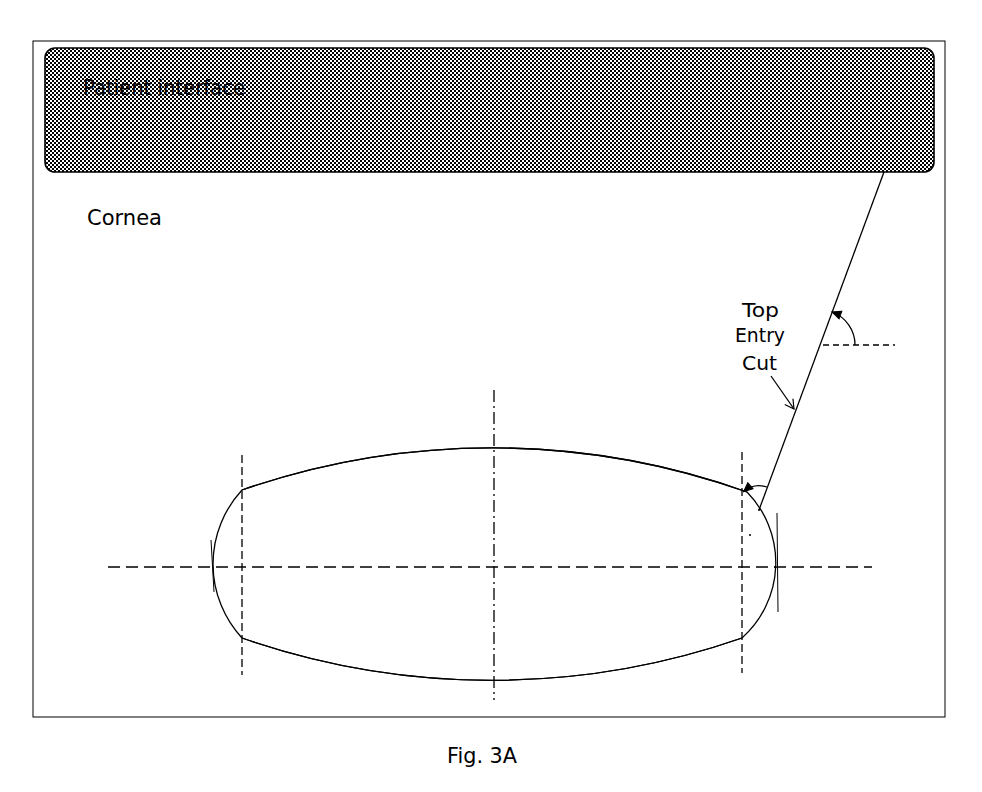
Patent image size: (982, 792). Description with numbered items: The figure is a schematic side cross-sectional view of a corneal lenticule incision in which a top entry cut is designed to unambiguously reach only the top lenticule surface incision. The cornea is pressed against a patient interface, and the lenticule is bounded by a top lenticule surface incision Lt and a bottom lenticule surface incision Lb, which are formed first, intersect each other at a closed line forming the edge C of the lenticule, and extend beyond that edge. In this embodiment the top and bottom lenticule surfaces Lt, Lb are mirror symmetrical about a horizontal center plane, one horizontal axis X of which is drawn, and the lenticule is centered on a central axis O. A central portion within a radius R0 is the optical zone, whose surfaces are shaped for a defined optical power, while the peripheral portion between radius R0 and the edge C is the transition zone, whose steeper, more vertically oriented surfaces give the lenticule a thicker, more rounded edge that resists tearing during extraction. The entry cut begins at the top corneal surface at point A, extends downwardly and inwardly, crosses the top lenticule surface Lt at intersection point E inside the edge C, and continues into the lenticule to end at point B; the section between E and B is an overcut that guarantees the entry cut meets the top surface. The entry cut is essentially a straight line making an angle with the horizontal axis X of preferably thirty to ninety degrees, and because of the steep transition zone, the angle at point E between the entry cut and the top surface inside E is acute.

The surface opening of entry cut A is at (887, 176).
The end point of entry cut B is at (748, 535).
The edge of lenticule C is at (778, 566).
The intersection point E is at (756, 510).
The central axis O is at (493, 527).
The horizontal axis X is at (505, 566).
The radius of optical zone R0 is at (488, 545).
The top lenticule surface incision Lt is at (316, 466).
The bottom lenticule surface incision Lb is at (308, 661).